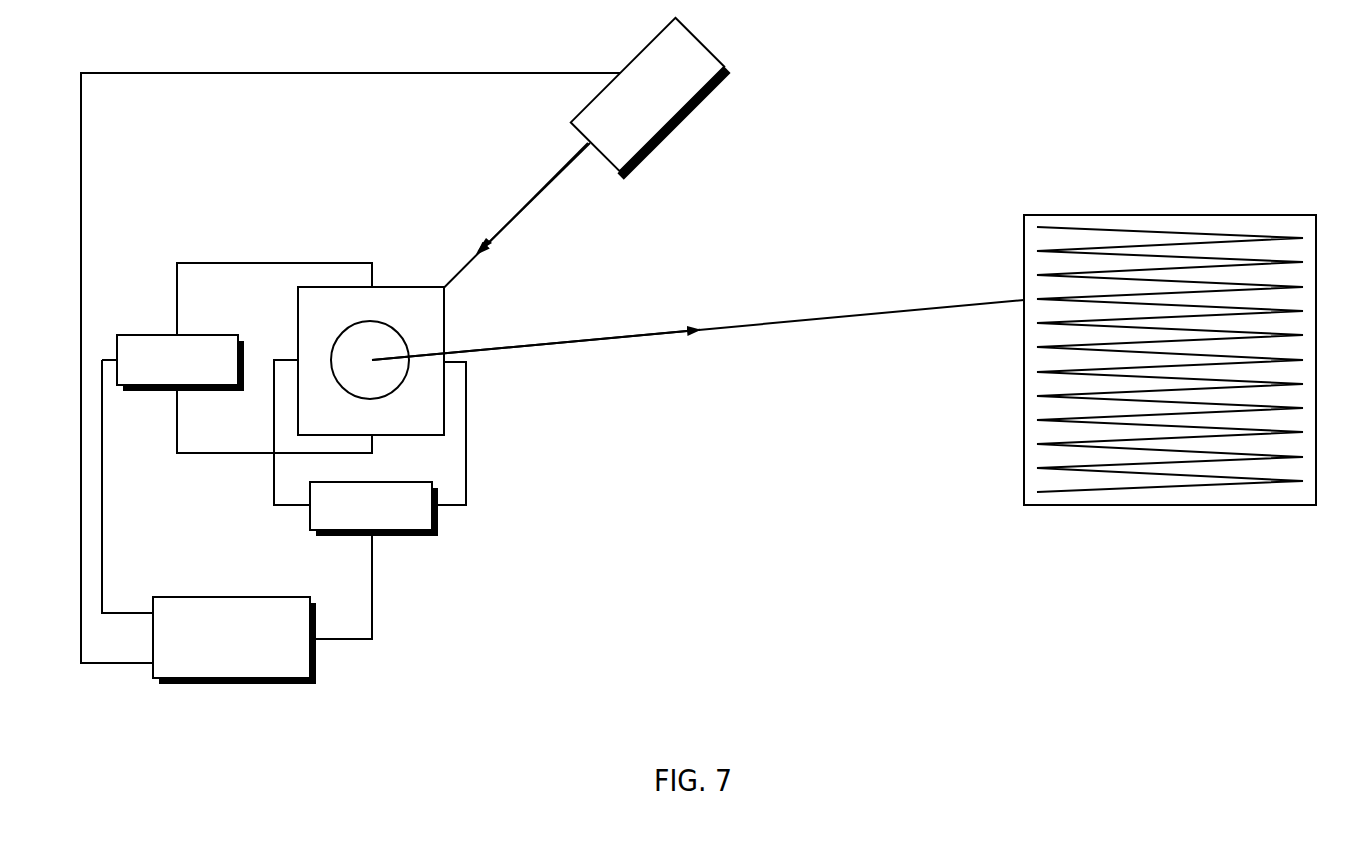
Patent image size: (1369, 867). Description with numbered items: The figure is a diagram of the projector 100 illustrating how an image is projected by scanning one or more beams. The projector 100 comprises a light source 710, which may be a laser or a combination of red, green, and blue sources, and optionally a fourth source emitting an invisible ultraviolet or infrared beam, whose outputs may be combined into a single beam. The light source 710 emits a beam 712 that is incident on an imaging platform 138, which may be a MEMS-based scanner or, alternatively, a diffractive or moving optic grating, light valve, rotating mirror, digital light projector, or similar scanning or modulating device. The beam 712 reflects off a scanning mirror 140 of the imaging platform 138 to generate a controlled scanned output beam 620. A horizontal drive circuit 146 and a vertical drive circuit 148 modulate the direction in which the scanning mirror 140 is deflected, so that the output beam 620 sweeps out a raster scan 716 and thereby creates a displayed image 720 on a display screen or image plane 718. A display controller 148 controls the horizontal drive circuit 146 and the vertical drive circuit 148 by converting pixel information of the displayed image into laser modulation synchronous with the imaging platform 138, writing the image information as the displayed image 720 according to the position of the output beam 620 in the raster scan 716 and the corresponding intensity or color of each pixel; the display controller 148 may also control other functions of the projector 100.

The projector 100 is at (1205, 57).
The light source 710 is at (703, 42).
The beam 712 is at (530, 200).
The imaging platform 138 is at (409, 287).
The scanning mirror 140 is at (395, 390).
The horizontal drive circuit 146 is at (151, 335).
The vertical drive circuit / display controller 148 is at (440, 518).
The output beam 620 is at (628, 337).
The displayed image 720 is at (1191, 334).
The display screen / image plane 718 is at (1316, 237).
The raster scan 716 is at (1215, 233).